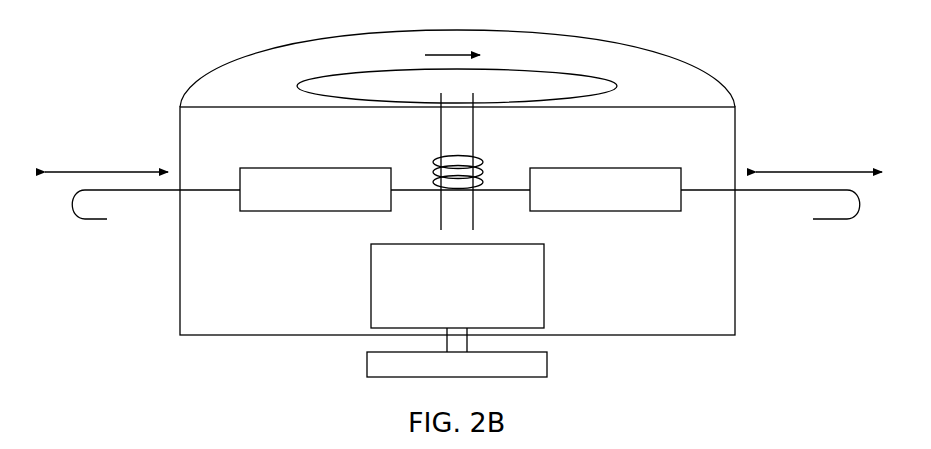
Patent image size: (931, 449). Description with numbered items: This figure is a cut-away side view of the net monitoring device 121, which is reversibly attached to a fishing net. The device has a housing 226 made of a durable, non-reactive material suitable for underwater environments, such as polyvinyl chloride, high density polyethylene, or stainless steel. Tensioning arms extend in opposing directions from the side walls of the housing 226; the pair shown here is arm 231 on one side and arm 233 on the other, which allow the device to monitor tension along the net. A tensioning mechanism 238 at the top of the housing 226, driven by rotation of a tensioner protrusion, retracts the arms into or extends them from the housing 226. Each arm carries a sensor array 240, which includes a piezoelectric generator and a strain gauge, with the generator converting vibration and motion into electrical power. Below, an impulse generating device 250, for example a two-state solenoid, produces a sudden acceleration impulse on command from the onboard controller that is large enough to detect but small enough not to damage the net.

The net monitoring device 121 is at (463, 189).
The housing 226 is at (184, 136).
The tensioning mechanism 238 is at (371, 50).
The sensor array 240 is at (331, 168).
The tensioning arm 231 is at (176, 191).
The tensioning arm 233 is at (803, 191).
The impulse generating device 250 is at (371, 263).